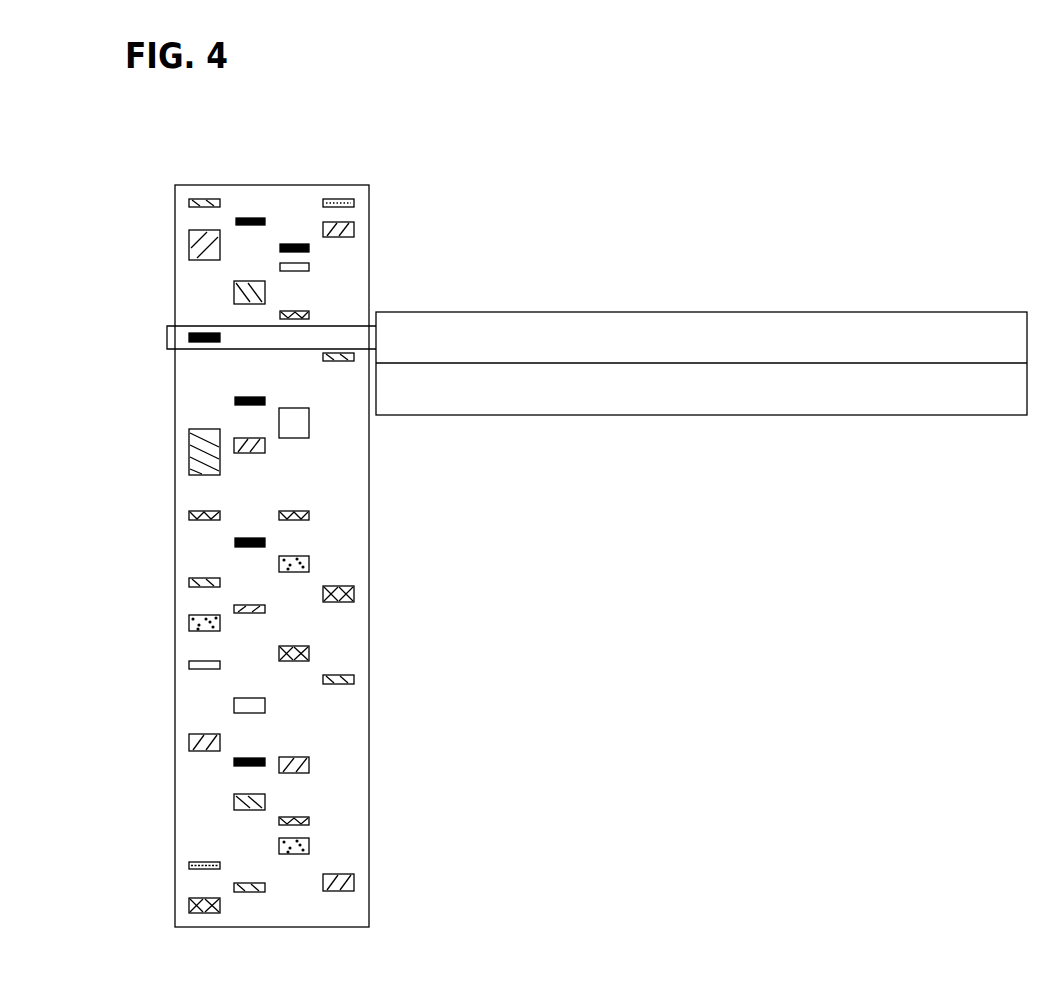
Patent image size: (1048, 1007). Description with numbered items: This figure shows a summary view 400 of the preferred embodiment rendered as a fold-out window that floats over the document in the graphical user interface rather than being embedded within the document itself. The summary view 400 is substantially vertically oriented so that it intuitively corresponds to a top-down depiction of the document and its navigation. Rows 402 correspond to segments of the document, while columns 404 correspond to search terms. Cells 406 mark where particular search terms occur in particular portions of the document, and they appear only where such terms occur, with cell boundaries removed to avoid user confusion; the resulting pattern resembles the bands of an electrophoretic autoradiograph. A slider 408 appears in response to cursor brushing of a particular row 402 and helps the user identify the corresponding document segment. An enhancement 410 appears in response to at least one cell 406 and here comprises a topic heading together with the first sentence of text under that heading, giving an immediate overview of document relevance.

The summary view 400 is at (455, 559).
The rows 402 is at (373, 678).
The columns 404 is at (339, 185).
The cells 406 is at (354, 224).
The slider 408 is at (167, 335).
The enhancement 410 is at (915, 312).